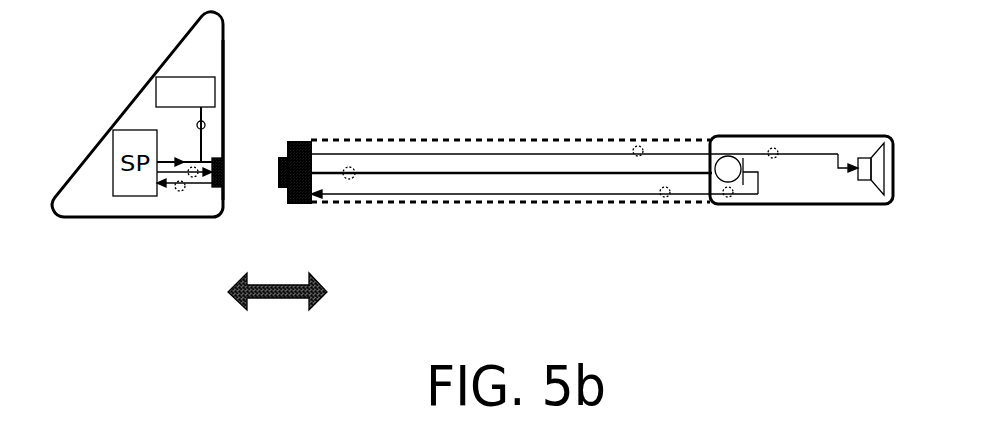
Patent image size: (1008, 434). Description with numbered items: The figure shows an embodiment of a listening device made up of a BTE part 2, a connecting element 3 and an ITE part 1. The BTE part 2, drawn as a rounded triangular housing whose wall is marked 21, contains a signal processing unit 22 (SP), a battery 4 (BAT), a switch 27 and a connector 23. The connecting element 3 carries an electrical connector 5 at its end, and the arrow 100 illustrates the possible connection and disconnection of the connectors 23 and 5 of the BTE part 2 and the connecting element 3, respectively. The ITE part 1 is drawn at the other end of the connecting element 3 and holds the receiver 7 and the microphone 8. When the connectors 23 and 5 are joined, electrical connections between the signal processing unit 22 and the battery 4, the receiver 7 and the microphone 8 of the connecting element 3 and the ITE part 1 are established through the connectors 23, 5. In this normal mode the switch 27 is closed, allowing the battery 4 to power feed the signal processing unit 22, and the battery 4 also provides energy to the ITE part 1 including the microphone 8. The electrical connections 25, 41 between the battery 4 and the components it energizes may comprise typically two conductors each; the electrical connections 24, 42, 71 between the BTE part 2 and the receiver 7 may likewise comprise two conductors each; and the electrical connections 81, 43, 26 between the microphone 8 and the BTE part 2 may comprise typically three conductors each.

The ITE part 1 is at (752, 211).
The BTE part 2 is at (100, 128).
The connecting element 3 is at (412, 133).
The battery 4 is at (180, 77).
The electrical connector 5 is at (292, 141).
The receiver 7 is at (870, 158).
The microphone 8 is at (730, 165).
The housing wall 21 is at (224, 63).
The signal processing unit 22 is at (155, 186).
The connector 23 is at (225, 160).
The electrical connection 24 is at (203, 182).
The electrical connection 25 is at (206, 125).
The electrical connection 26 is at (188, 193).
The switch 27 is at (182, 160).
The electrical connection 41 is at (350, 166).
The electrical connection 42 is at (639, 145).
The electrical connection 43 is at (661, 196).
The electrical connection 71 is at (775, 150).
The electrical connection 81 is at (727, 198).
The arrow 100 is at (280, 288).